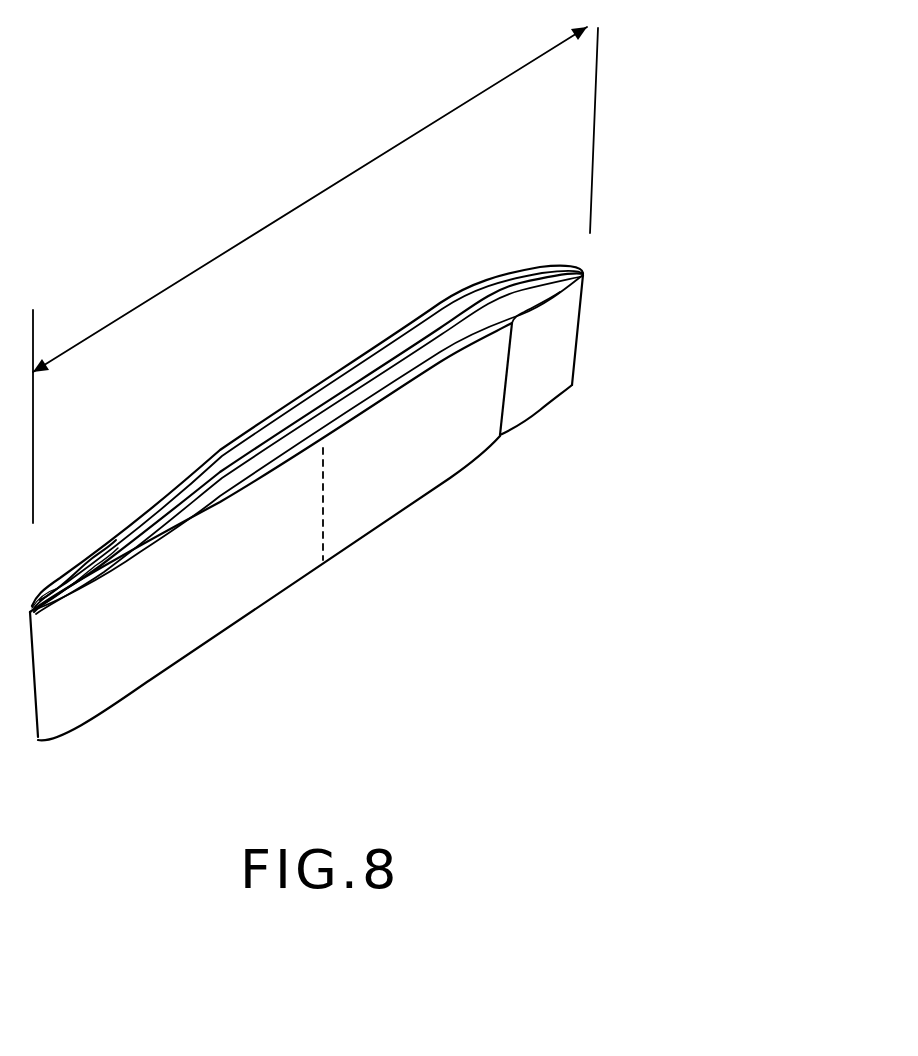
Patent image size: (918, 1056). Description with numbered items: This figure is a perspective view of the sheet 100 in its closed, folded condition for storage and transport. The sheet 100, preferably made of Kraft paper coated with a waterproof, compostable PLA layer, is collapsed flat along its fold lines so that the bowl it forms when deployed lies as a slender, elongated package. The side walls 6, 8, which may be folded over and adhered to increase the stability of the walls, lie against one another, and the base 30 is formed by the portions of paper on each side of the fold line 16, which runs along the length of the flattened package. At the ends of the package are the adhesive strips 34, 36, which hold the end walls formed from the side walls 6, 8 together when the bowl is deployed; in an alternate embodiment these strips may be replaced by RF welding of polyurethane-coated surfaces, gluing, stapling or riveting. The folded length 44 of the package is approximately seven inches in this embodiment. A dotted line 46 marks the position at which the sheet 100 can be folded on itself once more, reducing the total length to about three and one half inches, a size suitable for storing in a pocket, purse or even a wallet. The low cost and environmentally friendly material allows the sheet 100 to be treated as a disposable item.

The side wall 8 is at (283, 558).
The side wall 6 is at (240, 428).
The base 30 is at (303, 432).
The fold line 16 is at (350, 386).
The adhesive strip 34 is at (82, 549).
The adhesive strip 36 is at (520, 403).
The dotted line 46 is at (325, 515).
The folded length 44 is at (265, 227).
The sheet 100 is at (160, 745).